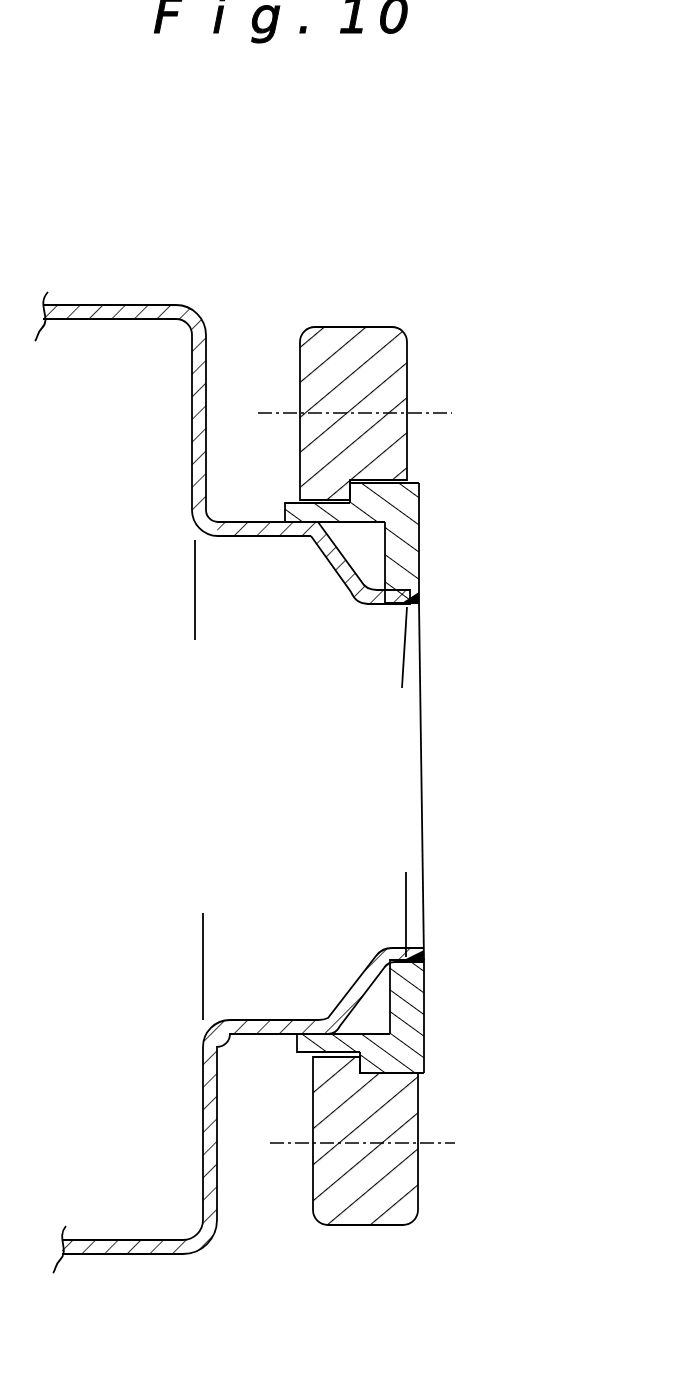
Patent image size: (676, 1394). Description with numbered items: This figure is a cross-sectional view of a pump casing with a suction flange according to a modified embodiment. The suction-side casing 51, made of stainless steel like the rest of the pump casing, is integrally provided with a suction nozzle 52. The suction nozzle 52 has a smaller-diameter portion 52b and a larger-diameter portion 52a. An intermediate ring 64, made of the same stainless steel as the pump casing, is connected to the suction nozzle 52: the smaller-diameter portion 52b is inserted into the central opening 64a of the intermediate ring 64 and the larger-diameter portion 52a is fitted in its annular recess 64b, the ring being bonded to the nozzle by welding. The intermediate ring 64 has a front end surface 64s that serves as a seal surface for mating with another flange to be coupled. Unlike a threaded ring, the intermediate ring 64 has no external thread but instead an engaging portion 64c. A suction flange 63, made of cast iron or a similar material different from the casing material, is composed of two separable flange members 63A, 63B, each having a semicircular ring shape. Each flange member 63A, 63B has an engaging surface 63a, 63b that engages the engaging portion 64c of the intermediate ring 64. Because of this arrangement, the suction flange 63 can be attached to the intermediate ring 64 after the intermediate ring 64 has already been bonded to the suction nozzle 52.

The suction-side casing 51 is at (155, 305).
The suction nozzle 52 is at (308, 750).
The larger-diameter portion 52a is at (258, 532).
The smaller-diameter portion 52b is at (390, 617).
The suction flange 63 is at (418, 773).
The flange member 63A is at (387, 342).
The flange member 63B is at (390, 1193).
The engaging surface 63a is at (418, 490).
The engaging surface 63b is at (380, 1063).
The intermediate ring 64 is at (432, 699).
The central opening 64a is at (407, 605).
The annular recess 64b is at (345, 555).
The engaging portion 64c is at (342, 492).
The front end surface 64s is at (420, 572).